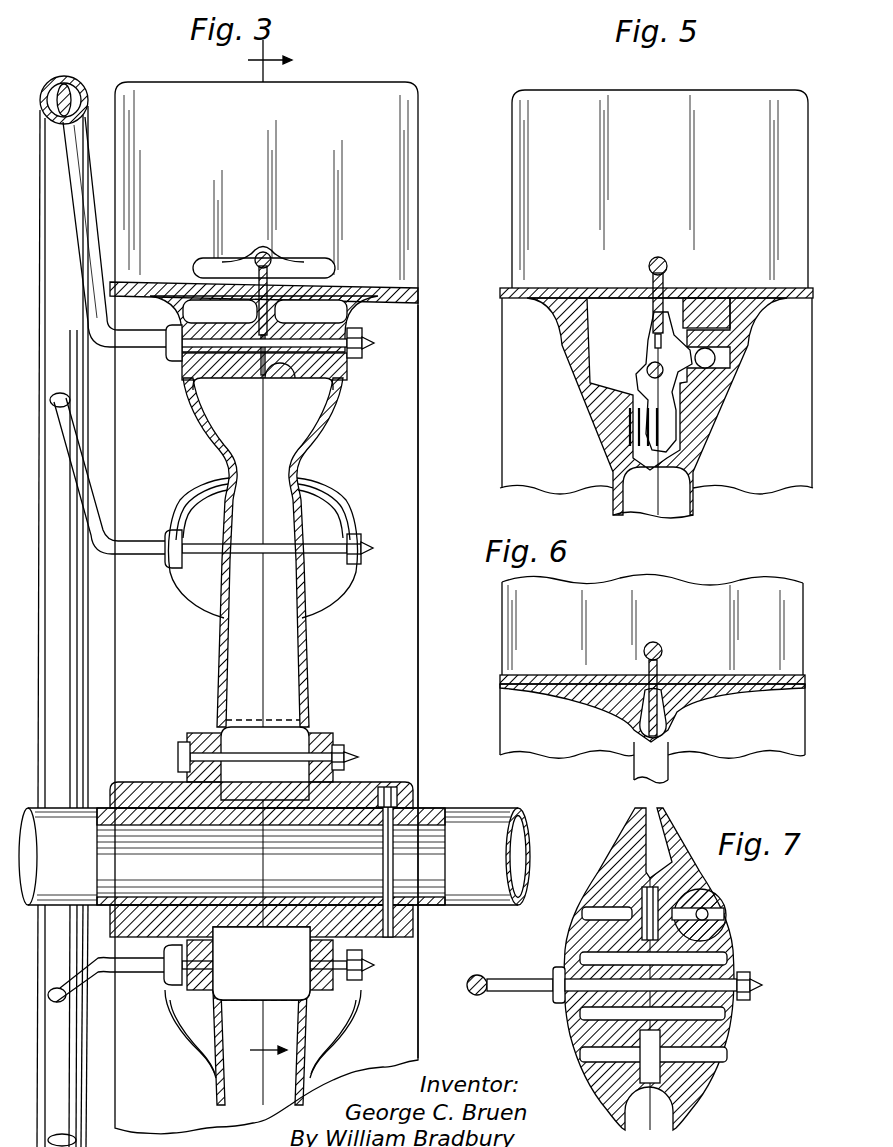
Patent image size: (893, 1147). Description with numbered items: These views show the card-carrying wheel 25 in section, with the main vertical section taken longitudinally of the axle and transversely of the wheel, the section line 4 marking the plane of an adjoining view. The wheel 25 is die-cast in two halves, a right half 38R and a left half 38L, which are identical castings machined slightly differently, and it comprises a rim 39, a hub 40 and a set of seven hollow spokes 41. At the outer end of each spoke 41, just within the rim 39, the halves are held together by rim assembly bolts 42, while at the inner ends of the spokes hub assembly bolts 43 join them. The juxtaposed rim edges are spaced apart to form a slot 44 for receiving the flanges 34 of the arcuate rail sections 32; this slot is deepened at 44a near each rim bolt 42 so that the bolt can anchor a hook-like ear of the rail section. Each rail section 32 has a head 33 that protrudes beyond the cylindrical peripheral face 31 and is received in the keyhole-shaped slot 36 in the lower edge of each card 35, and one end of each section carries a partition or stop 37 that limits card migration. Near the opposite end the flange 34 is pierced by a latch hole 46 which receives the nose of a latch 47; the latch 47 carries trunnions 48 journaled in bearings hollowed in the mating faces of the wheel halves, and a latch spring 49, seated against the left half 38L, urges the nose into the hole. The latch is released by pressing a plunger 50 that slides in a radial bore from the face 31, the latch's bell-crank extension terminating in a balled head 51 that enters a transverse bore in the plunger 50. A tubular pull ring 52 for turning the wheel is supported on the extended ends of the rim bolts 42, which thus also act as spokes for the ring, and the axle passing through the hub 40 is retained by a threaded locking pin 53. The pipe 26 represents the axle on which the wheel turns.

In FIG. 3, the section line 4- 4 is at (267, 551).
In FIG. 3, the wheel 25 is at (424, 602).
In FIG. 5, the wheel 25 is at (656, 396).
In FIG. 6, the wheel 25 is at (790, 742).
In FIG. 3, the horizontal support pipe 26 is at (475, 816).
In FIG. 3, the peripheral face 31 is at (372, 282).
In FIG. 5, the peripheral face 31 is at (573, 290).
In FIG. 6, the peripheral face 31 is at (548, 661).
In FIG. 3, the arcuate rail sections 32 is at (258, 256).
In FIG. 5, the arcuate rail sections 32 is at (668, 268).
In FIG. 6, the arcuate rail sections 32 is at (660, 652).
In FIG. 3, the head 33 is at (305, 262).
In FIG. 5, the head 33 is at (672, 240).
In FIG. 3, the flange 34 is at (268, 372).
In FIG. 5, the flange 34 is at (664, 282).
In FIG. 3, the card 35 is at (404, 126).
In FIG. 5, the card 35 is at (769, 117).
In FIG. 6, the card 35 is at (786, 574).
In FIG. 5, the keyhole-shaped slot 36 is at (650, 277).
In FIG. 6, the keyhole-shaped slot 36 is at (646, 666).
In FIG. 3, the partition or stop 37 is at (270, 258).
In FIG. 3, the left half 38L is at (200, 408).
In FIG. 5, the left half 38L is at (632, 395).
In FIG. 6, the left half 38L is at (634, 745).
In FIG. 7, the left half 38L is at (636, 824).
In FIG. 3, the right half 38R is at (312, 448).
In FIG. 5, the right half 38R is at (720, 400).
In FIG. 6, the right half 38R is at (662, 756).
In FIG. 7, the right half 38R is at (660, 824).
In FIG. 3, the rim 39 is at (385, 283).
In FIG. 5, the rim 39 is at (545, 315).
In FIG. 6, the rim 39 is at (543, 686).
In FIG. 3, the hub 40 is at (348, 761).
In FIG. 3, the hollow spokes 41 is at (310, 672).
In FIG. 3, the rim assembly bolts 42 is at (375, 343).
In FIG. 7, the rim assembly bolts 42 is at (760, 990).
In FIG. 3, the hub assembly bolts 43 is at (330, 735).
In FIG. 3, the slot 44 is at (220, 311).
In FIG. 5, the slot 44 is at (668, 296).
In FIG. 6, the slot 44 is at (665, 692).
In FIG. 3, the deepened slot portion 44a is at (311, 311).
In FIG. 5, the latch hole 46 is at (652, 320).
In FIG. 5, the latch 47 is at (674, 393).
In FIG. 7, the latch 47 is at (680, 888).
In FIG. 5, the trunnions 48 is at (647, 370).
In FIG. 7, the trunnions 48 is at (644, 890).
In FIG. 5, the latch spring 49 is at (630, 428).
In FIG. 5, the plunger 50 is at (748, 298).
In FIG. 7, the plunger 50 is at (724, 928).
In FIG. 5, the balled head 51 is at (715, 357).
In FIG. 7, the balled head 51 is at (726, 948).
In FIG. 3, the tubular pull ring 52 is at (82, 88).
In FIG. 3, the threaded locking pin 53 is at (398, 796).